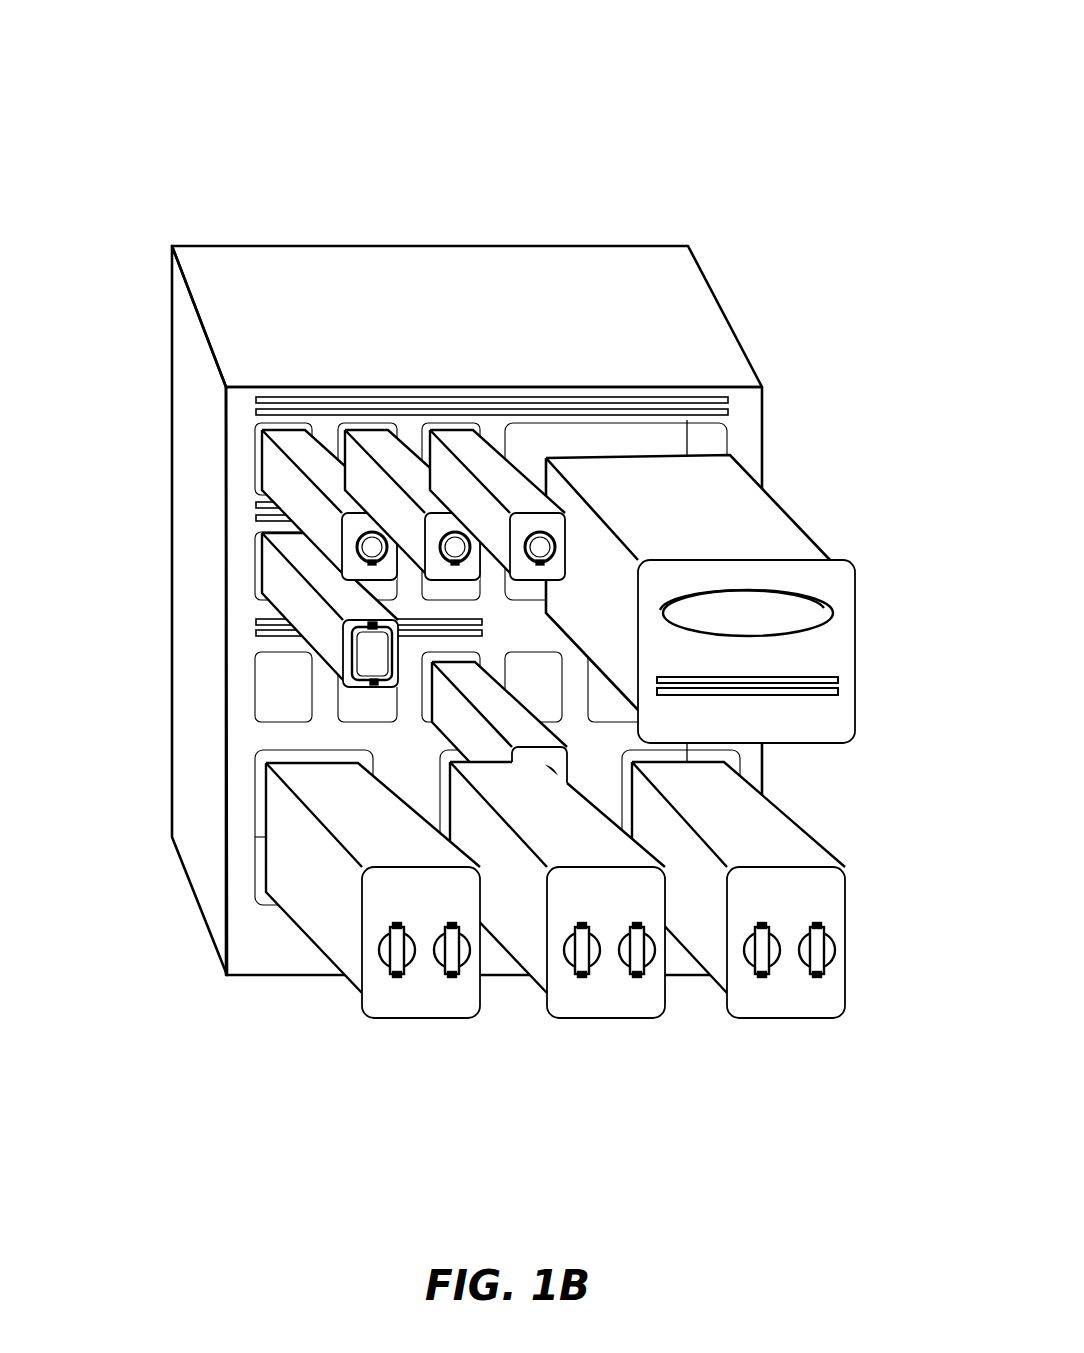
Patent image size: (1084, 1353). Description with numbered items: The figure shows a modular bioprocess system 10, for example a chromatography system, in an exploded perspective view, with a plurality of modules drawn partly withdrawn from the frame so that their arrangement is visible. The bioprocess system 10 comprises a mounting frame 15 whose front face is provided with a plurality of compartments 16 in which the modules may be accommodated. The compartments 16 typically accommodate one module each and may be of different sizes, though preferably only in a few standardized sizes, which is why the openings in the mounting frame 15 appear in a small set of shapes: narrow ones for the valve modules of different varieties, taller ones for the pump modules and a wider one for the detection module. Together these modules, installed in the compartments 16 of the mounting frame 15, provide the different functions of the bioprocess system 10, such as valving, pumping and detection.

The bioprocess system 10 is at (657, 107).
The mounting frame 15 is at (763, 410).
The compartments 16 is at (727, 450).